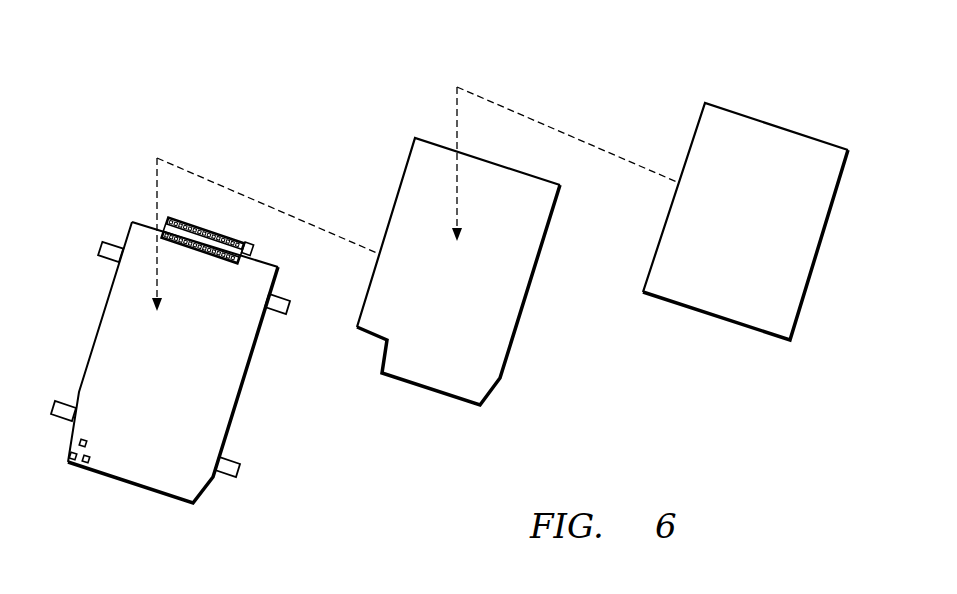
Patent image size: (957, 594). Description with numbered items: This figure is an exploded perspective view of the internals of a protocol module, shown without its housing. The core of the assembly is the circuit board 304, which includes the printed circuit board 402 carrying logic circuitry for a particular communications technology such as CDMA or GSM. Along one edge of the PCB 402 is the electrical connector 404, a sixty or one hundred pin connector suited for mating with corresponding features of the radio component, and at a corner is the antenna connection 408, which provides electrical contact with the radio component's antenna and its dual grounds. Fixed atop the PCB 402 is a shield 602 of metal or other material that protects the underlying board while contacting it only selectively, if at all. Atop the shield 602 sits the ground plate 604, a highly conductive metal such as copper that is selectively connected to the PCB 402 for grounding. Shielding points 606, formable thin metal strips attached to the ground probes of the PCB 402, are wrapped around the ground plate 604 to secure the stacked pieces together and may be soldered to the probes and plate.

The circuit board 304 is at (199, 113).
The printed circuit board 402 is at (105, 297).
The electrical connector 404 is at (213, 229).
The antenna connection 408 is at (73, 467).
The shield 602 is at (402, 180).
The ground plate 604 is at (695, 127).
The shielding points 606 is at (281, 315).